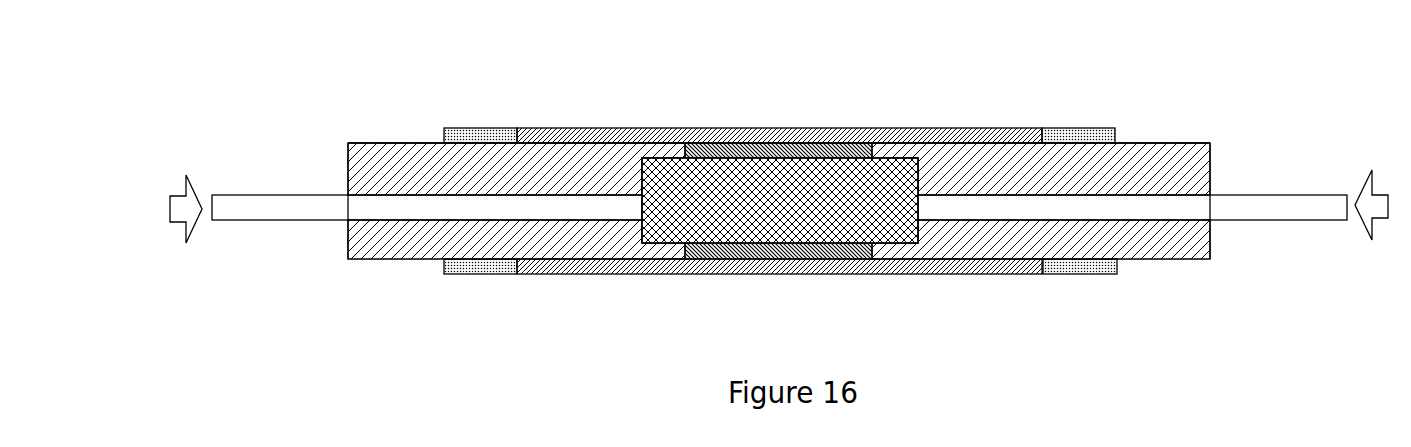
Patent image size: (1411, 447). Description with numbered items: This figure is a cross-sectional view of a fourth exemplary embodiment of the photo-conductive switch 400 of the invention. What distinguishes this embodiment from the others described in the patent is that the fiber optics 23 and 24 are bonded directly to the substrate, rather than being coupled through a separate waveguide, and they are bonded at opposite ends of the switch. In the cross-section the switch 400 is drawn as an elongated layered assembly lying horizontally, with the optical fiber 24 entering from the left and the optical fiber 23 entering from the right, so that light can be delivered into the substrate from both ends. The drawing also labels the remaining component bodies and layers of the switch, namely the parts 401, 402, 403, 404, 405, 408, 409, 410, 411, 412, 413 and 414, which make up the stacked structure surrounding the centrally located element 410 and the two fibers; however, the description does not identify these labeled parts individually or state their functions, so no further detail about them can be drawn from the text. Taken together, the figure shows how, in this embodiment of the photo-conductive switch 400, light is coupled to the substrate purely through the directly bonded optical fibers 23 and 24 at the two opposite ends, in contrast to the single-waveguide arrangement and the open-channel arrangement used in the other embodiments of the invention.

The optical fiber 23 is at (1258, 190).
The optical fiber 24 is at (292, 193).
The photo-conductive switch 400 is at (907, 75).
The housing body 401 is at (1173, 138).
The upper housing half 402 is at (398, 142).
The lower housing half 403 is at (420, 260).
The right end face 404 is at (1211, 235).
The left end face 405 is at (347, 242).
The top cover layer 408 is at (738, 127).
The top end pad 409 is at (1080, 127).
The core insert 410 is at (795, 211).
The upper bonding layer 411 is at (798, 143).
The lower bonding layer 412 is at (800, 260).
The bottom cover layer 413 is at (738, 275).
The bottom end pad 414 is at (1087, 275).